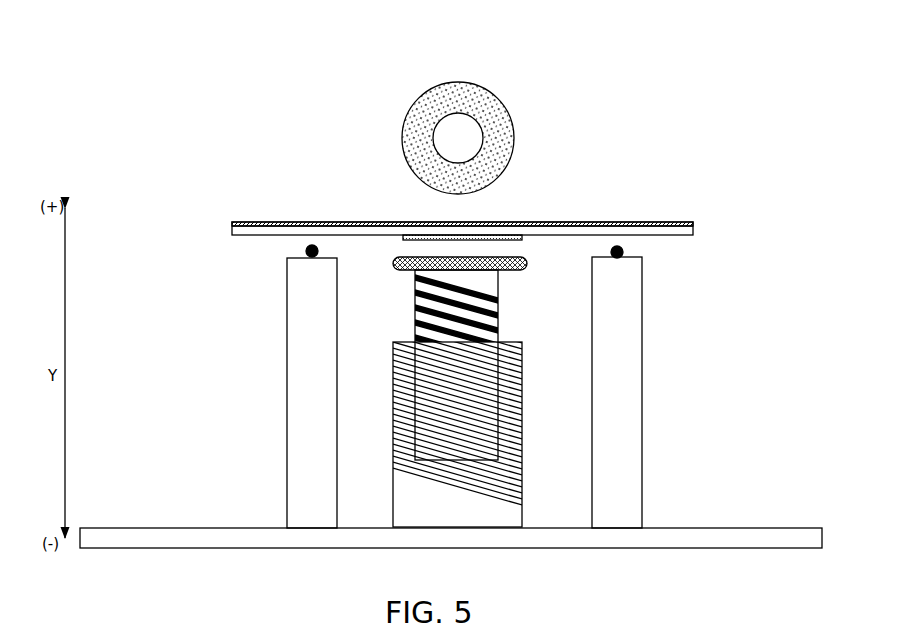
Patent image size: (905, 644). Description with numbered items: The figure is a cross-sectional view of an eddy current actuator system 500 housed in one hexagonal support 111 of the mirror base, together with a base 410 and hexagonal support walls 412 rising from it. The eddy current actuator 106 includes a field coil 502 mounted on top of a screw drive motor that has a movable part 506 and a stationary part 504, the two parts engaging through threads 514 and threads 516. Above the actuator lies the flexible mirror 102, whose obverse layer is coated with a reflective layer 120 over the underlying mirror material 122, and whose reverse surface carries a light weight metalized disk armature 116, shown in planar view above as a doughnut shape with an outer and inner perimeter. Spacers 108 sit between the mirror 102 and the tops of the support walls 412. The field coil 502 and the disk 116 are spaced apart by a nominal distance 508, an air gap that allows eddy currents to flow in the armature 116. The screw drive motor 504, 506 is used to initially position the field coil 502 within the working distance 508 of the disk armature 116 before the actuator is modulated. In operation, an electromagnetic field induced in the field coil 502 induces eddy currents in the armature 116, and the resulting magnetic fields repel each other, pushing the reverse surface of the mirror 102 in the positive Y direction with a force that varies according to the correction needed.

The system 500 is at (361, 48).
The metalized disk armature 116 is at (514, 158).
The flexible mirror 102 is at (470, 205).
The reflective layer 120 is at (656, 220).
The cover substrate 122 is at (696, 230).
The spacer / support bead 108 is at (299, 249).
The nominal distance 508 is at (442, 248).
The field coil 502 is at (531, 263).
The eddy current actuator 106 is at (392, 277).
The threads 514 is at (414, 293).
The movable part 506 is at (505, 285).
The threads 516 is at (392, 417).
The stationary part 504 is at (459, 413).
The hexagonal support walls 412 is at (285, 451).
The hexagonal support 111 is at (451, 402).
The base plate 410 is at (776, 525).